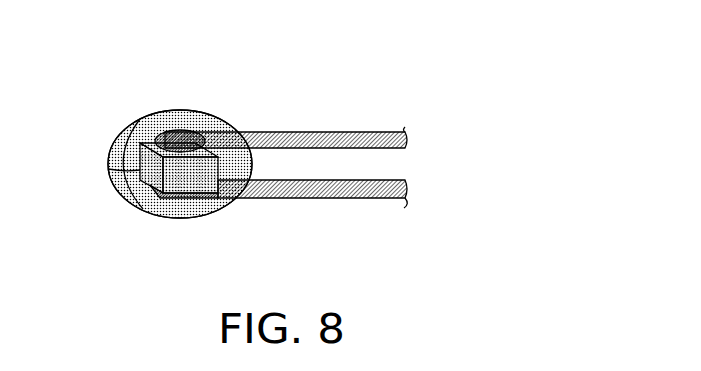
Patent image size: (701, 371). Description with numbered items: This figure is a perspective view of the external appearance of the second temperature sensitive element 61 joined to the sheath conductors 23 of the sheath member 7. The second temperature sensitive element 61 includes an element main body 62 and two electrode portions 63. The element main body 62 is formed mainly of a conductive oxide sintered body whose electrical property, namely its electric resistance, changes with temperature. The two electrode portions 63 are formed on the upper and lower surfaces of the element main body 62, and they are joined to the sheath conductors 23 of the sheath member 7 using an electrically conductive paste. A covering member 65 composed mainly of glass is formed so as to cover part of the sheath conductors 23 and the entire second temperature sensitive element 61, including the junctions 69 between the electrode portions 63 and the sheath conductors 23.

The sheath member 7 is at (367, 118).
The sheath conductors 23 is at (298, 131).
The second temperature sensitive element 61 is at (105, 85).
The element main body 62 is at (112, 153).
The electrode portions 63 is at (142, 110).
The covering member 65 is at (213, 112).
The junctions 69 is at (188, 112).